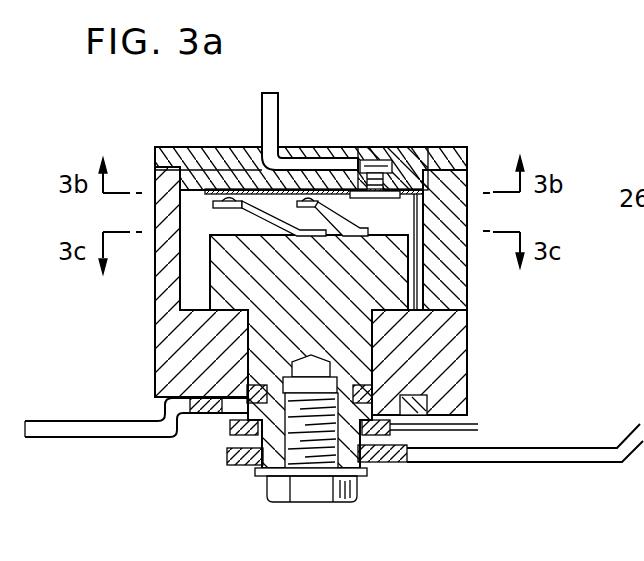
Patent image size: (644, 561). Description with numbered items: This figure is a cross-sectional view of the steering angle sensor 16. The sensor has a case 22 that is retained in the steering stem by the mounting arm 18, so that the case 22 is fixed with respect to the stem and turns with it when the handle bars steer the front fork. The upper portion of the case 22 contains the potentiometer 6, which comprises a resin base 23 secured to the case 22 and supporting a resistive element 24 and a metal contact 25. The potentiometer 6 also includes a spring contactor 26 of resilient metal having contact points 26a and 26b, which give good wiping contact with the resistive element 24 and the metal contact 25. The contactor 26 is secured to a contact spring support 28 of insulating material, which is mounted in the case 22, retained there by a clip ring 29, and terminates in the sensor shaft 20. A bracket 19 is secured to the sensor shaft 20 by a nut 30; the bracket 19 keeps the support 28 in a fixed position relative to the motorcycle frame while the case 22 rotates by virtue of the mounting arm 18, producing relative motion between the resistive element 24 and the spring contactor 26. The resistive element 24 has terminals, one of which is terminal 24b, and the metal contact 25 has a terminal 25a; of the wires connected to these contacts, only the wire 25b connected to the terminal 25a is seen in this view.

The potentiometer 6 is at (192, 204).
The steering angle sensor 16 is at (150, 322).
The mounting arm 18 is at (104, 437).
The bracket 19 is at (556, 460).
The sensor shaft 20 is at (282, 452).
The case 22 is at (460, 368).
The resin base 23 is at (358, 146).
The resistive element 24 is at (238, 190).
The terminal of the resistive element 24b is at (428, 205).
The metal contact 25 is at (355, 198).
The terminal of the metal contact 25a is at (383, 190).
The wire 25b is at (274, 113).
The spring contactor 26 is at (264, 222).
The contact point 26a is at (229, 209).
The contact point 26b is at (302, 208).
The contact spring support 28 is at (394, 290).
The clip ring 29 is at (470, 426).
The nut 30 is at (320, 492).